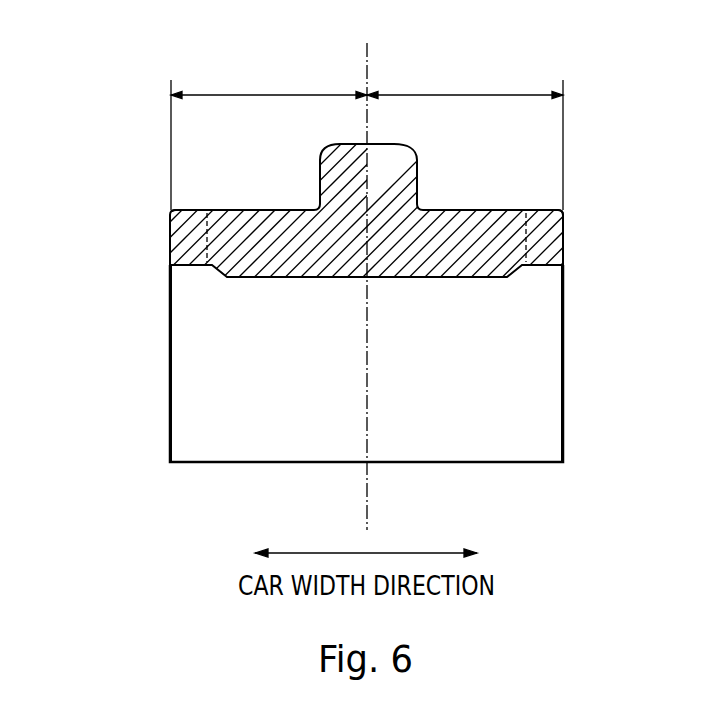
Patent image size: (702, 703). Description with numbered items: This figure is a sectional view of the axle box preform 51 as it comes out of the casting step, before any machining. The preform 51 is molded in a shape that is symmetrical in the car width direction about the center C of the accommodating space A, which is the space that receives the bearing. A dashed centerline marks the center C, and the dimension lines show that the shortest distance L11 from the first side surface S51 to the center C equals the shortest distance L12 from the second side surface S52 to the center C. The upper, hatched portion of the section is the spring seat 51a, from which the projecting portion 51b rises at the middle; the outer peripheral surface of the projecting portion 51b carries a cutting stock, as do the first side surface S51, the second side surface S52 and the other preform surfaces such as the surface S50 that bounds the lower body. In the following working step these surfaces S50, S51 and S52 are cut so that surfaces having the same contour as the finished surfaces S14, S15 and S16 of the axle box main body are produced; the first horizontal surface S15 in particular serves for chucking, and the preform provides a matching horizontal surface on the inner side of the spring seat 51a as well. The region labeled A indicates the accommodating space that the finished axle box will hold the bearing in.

The axle box preform 51 is at (394, 142).
The spring seat 51a is at (290, 200).
The projecting portion 51b is at (421, 182).
The center of the accommodating space C is at (367, 92).
The shortest distance between the first side surface and the center L11 is at (269, 137).
The shortest distance between the second side surface and the center L12 is at (465, 137).
The surface of the axle box main body S14 is at (507, 208).
The first horizontal surface S15 is at (193, 208).
The surface of the axle box main body S16 is at (539, 211).
The surface of the axle box preform S50 is at (464, 286).
The first side surface S51 is at (170, 288).
The second side surface S52 is at (563, 297).
The accommodating space A is at (273, 286).